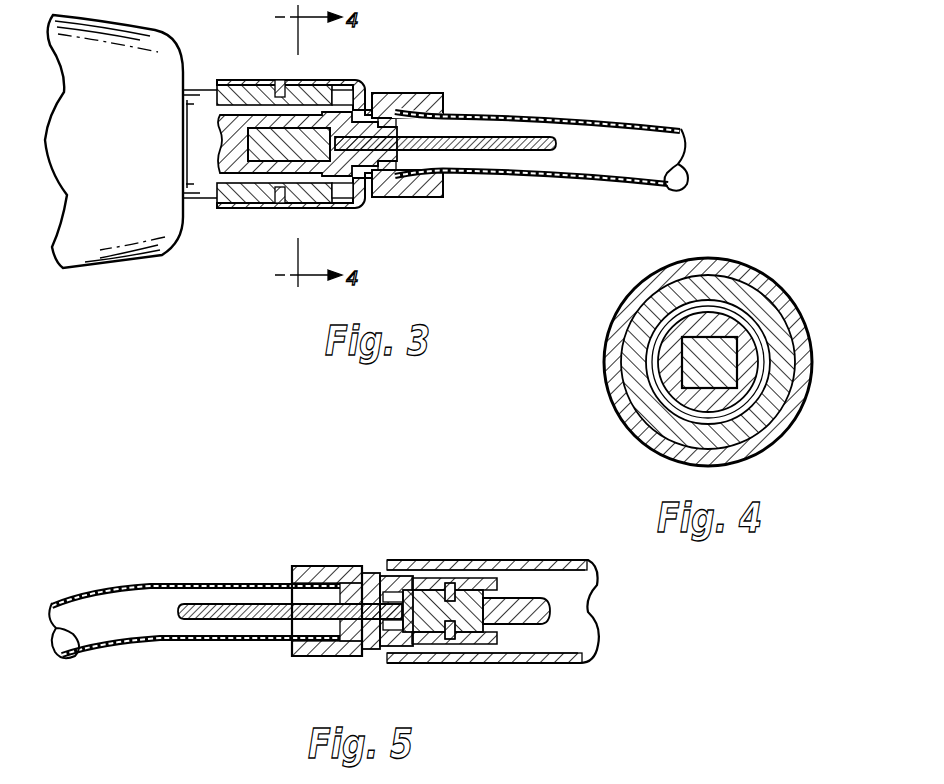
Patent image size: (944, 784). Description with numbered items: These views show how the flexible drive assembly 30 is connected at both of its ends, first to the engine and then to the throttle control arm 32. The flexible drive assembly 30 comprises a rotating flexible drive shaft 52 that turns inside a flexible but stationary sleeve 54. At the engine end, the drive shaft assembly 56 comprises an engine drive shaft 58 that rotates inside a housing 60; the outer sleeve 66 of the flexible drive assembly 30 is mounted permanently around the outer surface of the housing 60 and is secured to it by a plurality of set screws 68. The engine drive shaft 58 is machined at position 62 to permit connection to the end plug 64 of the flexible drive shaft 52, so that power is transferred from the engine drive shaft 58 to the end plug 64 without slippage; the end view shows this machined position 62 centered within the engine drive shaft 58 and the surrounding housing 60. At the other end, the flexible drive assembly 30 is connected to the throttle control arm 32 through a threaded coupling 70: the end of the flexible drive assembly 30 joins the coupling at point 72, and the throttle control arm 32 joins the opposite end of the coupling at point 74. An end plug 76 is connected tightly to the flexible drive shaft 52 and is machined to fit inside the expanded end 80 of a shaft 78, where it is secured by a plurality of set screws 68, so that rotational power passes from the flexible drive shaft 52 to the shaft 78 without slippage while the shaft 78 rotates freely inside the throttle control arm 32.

In FIG. 3, the flexible drive assembly 30 is at (623, 133).
In FIG. 5, the flexible drive assembly 30 is at (120, 612).
In FIG. 5, the throttle control arm 32 is at (560, 560).
In FIG. 3, the flexible drive shaft 52 is at (535, 137).
In FIG. 5, the flexible drive shaft 52 is at (198, 604).
In FIG. 3, the sleeve 54 is at (473, 111).
In FIG. 3, the drive shaft assembly 56 is at (197, 150).
In FIG. 3, the engine drive shaft 58 is at (213, 102).
In FIG. 4, the engine drive shaft 58 is at (708, 330).
In FIG. 3, the housing 60 is at (255, 97).
In FIG. 4, the housing 60 is at (792, 300).
In FIG. 3, the machined position 62 is at (298, 168).
In FIG. 4, the machined position 62 is at (737, 362).
In FIG. 3, the end plug 64 is at (362, 81).
In FIG. 3, the outer sleeve 66 is at (243, 206).
In FIG. 3, the set screws 68 is at (280, 82).
In FIG. 5, the set screws 68 is at (450, 583).
In FIG. 5, the threaded coupling 70 is at (378, 657).
In FIG. 5, the point 72 is at (346, 570).
In FIG. 5, the point 74 is at (391, 575).
In FIG. 5, the end plug 76 is at (430, 624).
In FIG. 5, the shaft 78 is at (510, 596).
In FIG. 5, the expanded end 80 is at (510, 645).